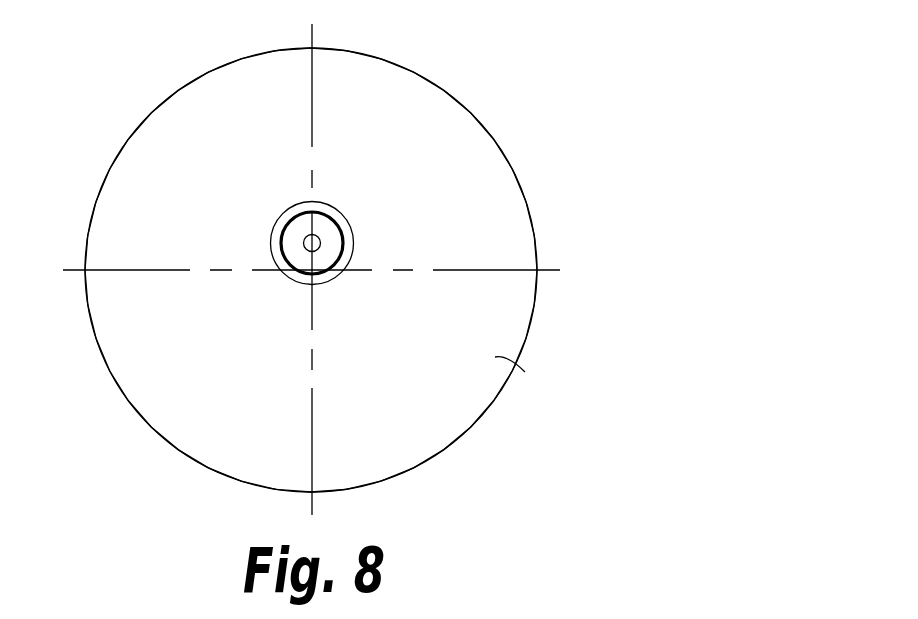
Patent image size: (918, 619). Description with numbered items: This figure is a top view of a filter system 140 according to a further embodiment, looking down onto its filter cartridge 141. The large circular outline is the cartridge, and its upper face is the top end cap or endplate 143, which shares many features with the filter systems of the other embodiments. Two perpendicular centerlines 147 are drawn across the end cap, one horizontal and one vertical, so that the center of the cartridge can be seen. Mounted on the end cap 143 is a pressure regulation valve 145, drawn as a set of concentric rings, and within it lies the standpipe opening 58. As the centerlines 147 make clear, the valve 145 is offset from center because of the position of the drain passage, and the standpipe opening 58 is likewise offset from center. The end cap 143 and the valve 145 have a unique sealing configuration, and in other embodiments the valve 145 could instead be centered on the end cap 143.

The filter system 140 is at (343, 257).
The filter cartridge 141 is at (437, 120).
The top end cap 143 is at (525, 372).
The pressure regulation valve 145 is at (282, 223).
The centerlines 147 is at (313, 29).
The standpipe opening 58 is at (350, 243).